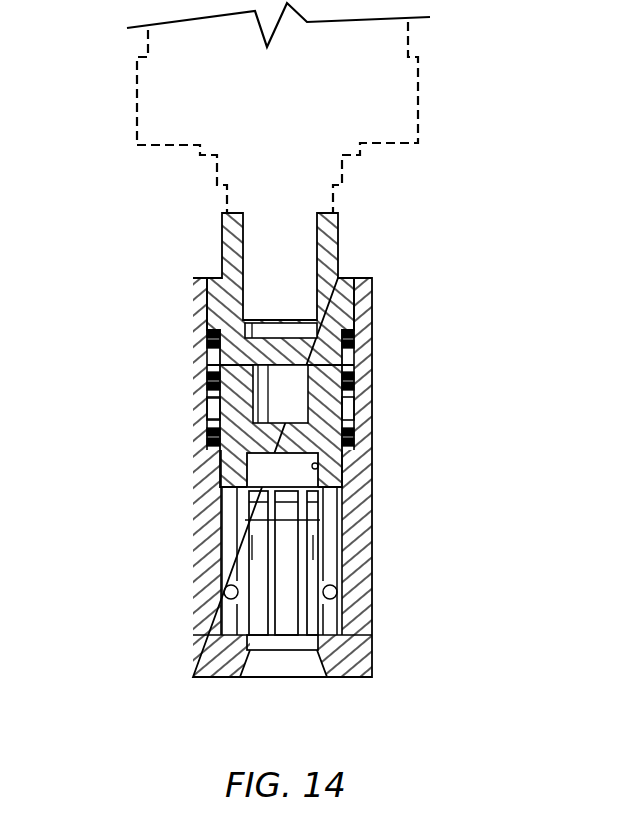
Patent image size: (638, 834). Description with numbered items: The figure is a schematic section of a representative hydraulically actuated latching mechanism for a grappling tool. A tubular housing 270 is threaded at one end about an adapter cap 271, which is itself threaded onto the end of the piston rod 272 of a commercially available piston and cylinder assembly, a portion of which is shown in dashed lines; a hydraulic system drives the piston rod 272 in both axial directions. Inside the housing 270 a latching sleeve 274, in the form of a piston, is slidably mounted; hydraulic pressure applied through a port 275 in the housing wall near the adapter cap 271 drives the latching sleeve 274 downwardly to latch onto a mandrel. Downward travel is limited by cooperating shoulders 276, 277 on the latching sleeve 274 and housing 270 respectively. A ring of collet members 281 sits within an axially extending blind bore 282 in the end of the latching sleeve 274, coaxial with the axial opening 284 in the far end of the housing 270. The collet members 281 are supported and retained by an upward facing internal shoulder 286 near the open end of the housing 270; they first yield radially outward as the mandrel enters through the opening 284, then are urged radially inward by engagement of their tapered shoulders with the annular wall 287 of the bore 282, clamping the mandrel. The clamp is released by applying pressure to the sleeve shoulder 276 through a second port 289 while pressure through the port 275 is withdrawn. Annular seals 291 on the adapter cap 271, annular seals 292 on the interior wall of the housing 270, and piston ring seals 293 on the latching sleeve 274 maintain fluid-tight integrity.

The tubular housing 270 is at (186, 562).
The adapter cap 271 is at (340, 292).
The piston rod 272 is at (285, 257).
The latching sleeve 274 is at (232, 400).
The port 275 is at (253, 366).
The shoulder 276 is at (352, 406).
The shoulder 277 is at (350, 416).
The collet members 281 is at (240, 610).
The blind bore 282 is at (318, 466).
The axial opening 284 is at (262, 662).
The internal shoulder 286 is at (233, 588).
The annular wall 287 is at (338, 598).
The second port 289 is at (212, 424).
The annular seals 291 is at (350, 340).
The annular seals 292 is at (352, 447).
The piston ring seals 293 is at (348, 374).